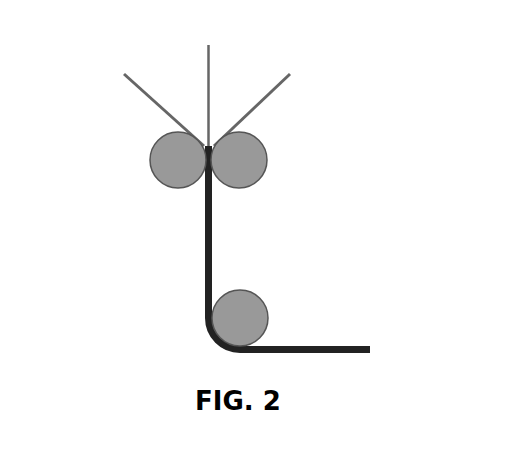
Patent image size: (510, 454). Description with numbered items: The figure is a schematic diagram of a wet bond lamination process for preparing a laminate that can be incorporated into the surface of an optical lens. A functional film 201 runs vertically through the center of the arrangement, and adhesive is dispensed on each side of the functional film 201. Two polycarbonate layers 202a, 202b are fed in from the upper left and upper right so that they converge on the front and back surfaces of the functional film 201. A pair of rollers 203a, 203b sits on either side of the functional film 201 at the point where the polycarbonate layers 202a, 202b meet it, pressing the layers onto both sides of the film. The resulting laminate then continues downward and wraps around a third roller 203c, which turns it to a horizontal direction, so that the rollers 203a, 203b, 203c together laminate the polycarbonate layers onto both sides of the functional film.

The functional film 201 is at (200, 60).
The polycarbonate layer 202a is at (140, 90).
The polycarbonate layer 202b is at (287, 82).
The roller 203a is at (165, 182).
The roller 203b is at (267, 168).
The roller 203c is at (268, 308).